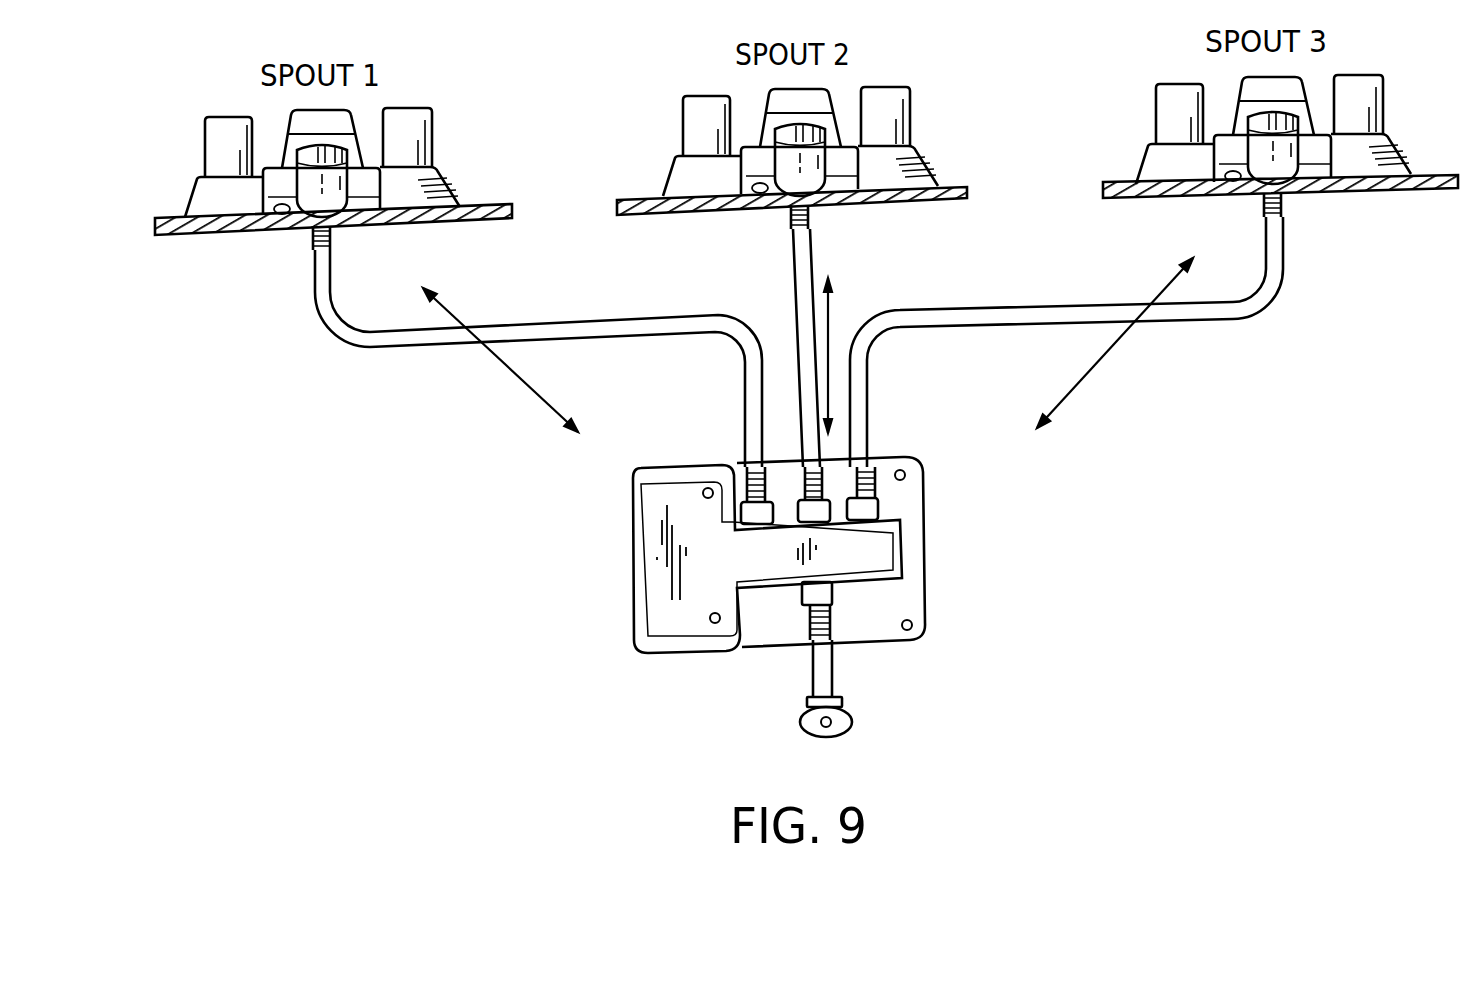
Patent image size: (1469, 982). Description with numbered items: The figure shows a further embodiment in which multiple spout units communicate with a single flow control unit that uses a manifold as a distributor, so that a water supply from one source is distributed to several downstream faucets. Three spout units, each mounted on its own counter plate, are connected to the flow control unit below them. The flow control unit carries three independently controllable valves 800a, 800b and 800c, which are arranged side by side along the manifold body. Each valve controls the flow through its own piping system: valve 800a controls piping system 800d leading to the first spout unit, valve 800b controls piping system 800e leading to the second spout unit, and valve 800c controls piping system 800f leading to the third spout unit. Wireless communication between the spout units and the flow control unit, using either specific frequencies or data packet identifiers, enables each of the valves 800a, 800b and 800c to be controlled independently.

The valve 800a is at (747, 460).
The valve 800b is at (800, 370).
The valve 800c is at (875, 460).
The piping system 800d is at (437, 347).
The piping system 800e is at (812, 222).
The piping system 800f is at (1180, 322).